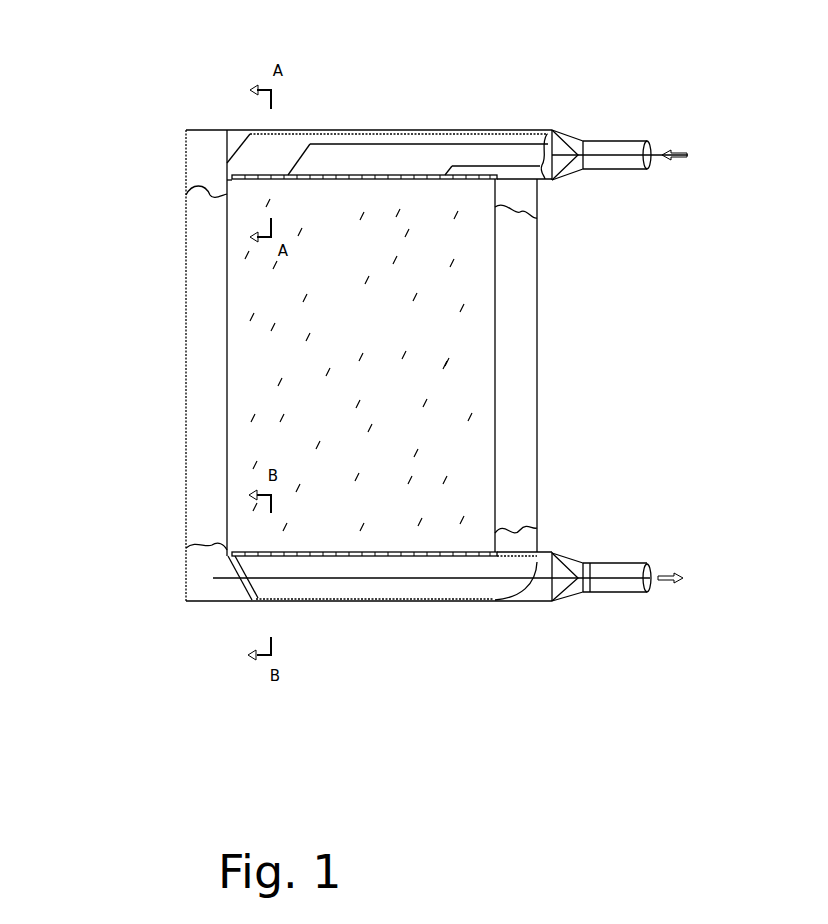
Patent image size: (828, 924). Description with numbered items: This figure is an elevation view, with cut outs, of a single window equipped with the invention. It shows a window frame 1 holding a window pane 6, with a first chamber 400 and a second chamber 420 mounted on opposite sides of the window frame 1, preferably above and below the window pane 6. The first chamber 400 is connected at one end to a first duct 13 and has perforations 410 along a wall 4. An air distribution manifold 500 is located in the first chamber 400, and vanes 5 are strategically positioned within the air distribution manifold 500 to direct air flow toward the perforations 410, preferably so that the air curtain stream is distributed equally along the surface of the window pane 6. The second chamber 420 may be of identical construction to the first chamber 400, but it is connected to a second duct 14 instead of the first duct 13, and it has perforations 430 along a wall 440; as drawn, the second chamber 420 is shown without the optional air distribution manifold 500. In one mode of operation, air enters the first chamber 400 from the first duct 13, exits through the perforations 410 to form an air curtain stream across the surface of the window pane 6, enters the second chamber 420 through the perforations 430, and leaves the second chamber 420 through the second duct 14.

The window frame 1 is at (200, 158).
The wall 4 is at (253, 178).
The vanes 5 is at (445, 143).
The window pane 6 is at (345, 302).
The first duct 13 is at (625, 158).
The second duct 14 is at (622, 563).
The first chamber 400 is at (273, 152).
The perforations 410 is at (337, 177).
The second chamber 420 is at (520, 592).
The perforations 430 is at (380, 556).
The wall 440 is at (268, 550).
The air distribution manifold 500 is at (500, 152).